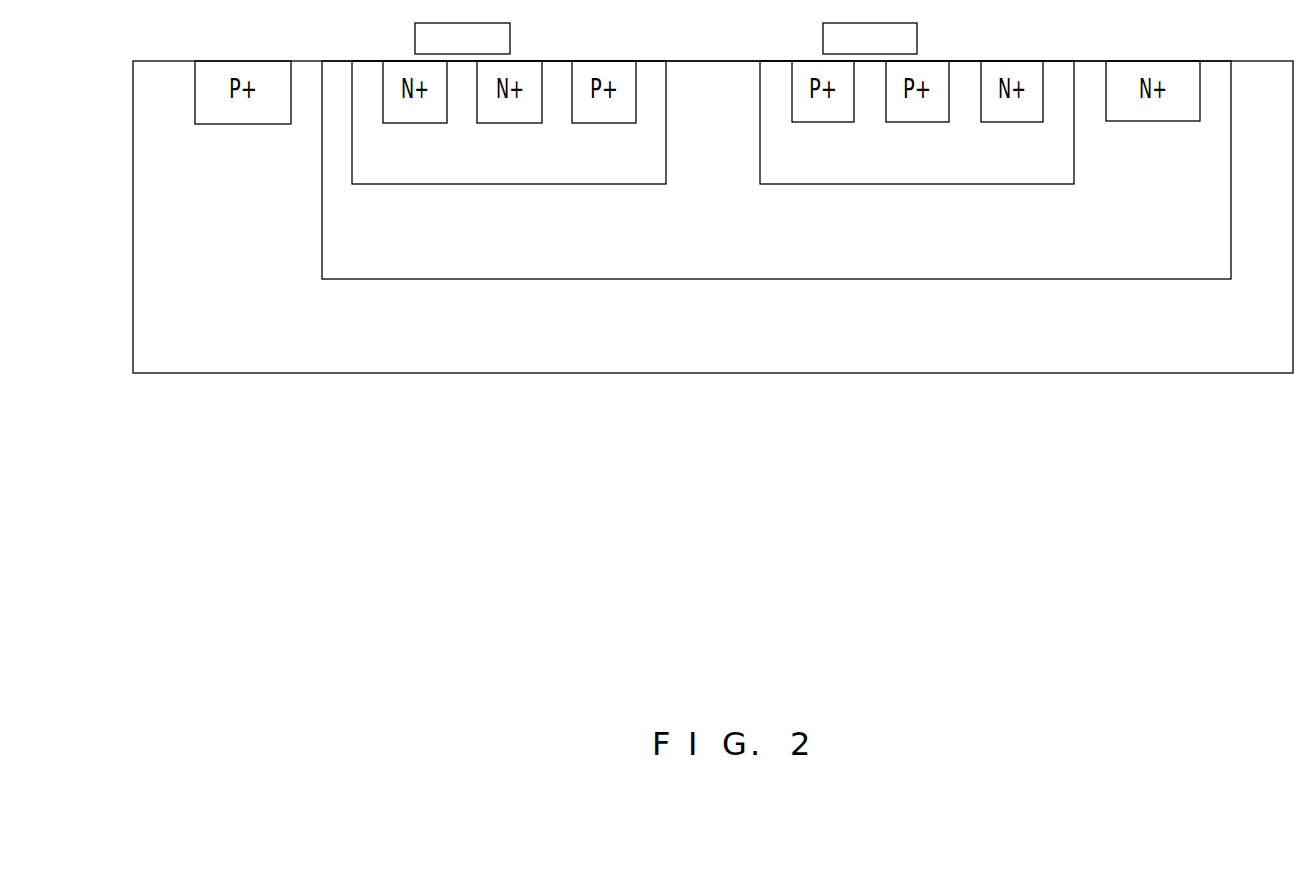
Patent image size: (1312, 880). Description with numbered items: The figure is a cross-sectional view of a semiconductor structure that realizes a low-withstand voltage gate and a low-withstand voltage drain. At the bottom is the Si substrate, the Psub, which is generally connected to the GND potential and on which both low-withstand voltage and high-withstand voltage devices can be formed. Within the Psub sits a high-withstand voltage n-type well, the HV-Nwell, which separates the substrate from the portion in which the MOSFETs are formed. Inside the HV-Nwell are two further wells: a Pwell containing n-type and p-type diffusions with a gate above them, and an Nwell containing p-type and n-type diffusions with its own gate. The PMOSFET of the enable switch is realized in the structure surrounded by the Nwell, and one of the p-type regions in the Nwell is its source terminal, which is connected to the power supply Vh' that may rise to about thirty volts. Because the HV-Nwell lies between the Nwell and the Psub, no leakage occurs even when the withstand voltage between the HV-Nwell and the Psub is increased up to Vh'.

The P-substrate Psub is at (713, 217).
The high-withstand voltage n-type WELL region HV-Nwell is at (776, 170).
The P-type well Pwell is at (509, 122).
The element Nwell is at (917, 122).